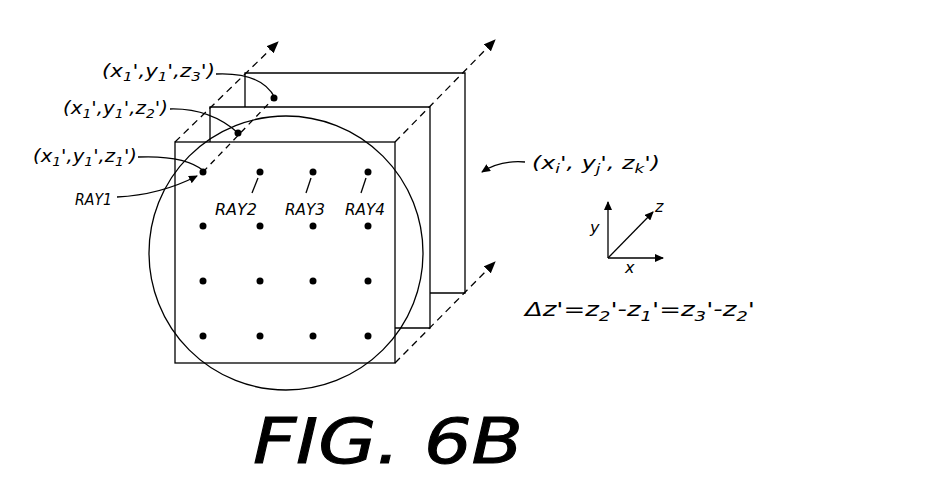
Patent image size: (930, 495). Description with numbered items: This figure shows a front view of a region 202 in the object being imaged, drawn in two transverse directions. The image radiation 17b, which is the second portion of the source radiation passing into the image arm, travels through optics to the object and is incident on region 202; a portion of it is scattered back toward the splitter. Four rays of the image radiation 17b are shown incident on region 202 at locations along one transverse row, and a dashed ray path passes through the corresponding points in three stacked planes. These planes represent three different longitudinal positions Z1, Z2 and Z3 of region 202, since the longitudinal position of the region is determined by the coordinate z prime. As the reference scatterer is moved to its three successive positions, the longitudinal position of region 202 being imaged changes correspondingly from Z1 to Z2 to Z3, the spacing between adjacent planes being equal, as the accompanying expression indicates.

The region 202 is at (137, 238).
The image radiation 17b is at (151, 282).
The longitudinal position z1' Z1 is at (297, 259).
The longitudinal position z2' Z2 is at (335, 225).
The longitudinal position z3' Z3 is at (367, 191).